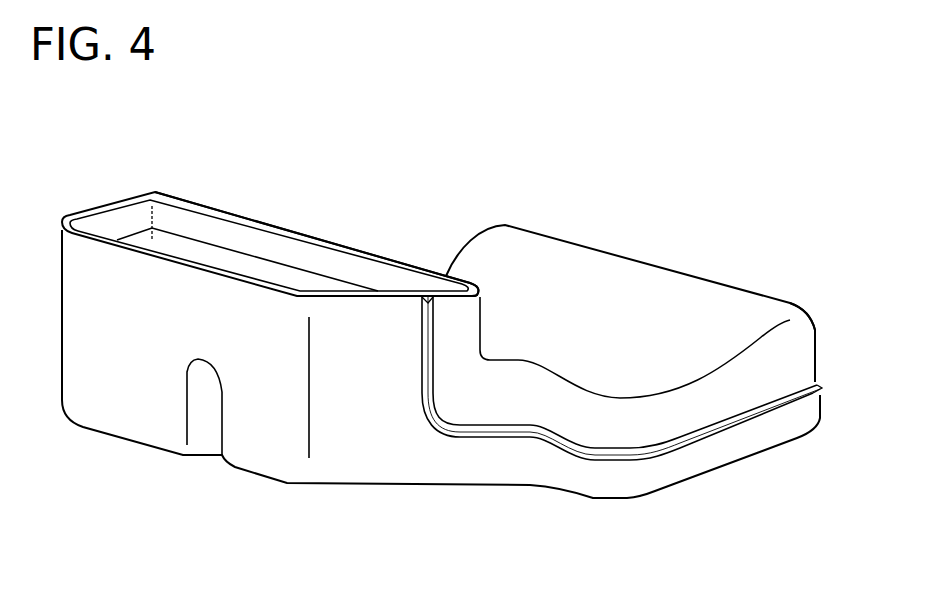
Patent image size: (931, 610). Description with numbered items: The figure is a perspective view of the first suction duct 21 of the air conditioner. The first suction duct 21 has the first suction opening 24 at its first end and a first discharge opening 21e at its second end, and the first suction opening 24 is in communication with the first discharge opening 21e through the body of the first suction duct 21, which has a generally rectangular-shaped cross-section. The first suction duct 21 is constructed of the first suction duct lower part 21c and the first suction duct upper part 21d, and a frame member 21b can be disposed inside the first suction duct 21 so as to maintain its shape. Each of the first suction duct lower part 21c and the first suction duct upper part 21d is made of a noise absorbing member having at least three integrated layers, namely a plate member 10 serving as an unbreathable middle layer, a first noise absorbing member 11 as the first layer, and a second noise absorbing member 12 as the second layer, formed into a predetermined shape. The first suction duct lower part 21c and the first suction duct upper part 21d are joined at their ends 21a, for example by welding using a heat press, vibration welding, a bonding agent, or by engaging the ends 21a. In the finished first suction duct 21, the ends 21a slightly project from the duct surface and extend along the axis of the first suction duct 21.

The plate member 10 is at (368, 252).
The first noise absorbing member 11 is at (366, 256).
The second noise absorbing member 12 is at (377, 252).
The first suction duct 21 is at (562, 285).
The ends 21a is at (770, 410).
The frame member 21b is at (195, 248).
The first suction duct lower part 21c is at (723, 452).
The first suction duct upper part 21d is at (737, 383).
The first discharge opening 21e is at (817, 348).
The first suction opening 24 is at (250, 237).